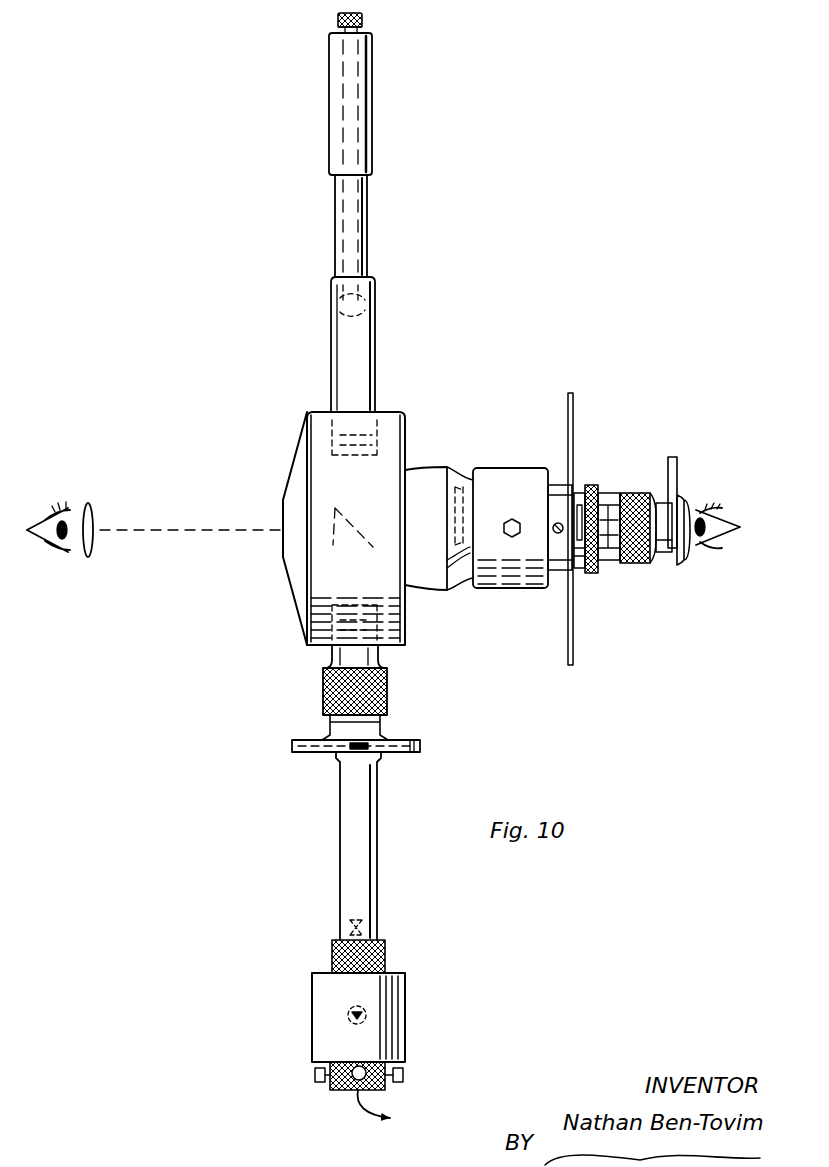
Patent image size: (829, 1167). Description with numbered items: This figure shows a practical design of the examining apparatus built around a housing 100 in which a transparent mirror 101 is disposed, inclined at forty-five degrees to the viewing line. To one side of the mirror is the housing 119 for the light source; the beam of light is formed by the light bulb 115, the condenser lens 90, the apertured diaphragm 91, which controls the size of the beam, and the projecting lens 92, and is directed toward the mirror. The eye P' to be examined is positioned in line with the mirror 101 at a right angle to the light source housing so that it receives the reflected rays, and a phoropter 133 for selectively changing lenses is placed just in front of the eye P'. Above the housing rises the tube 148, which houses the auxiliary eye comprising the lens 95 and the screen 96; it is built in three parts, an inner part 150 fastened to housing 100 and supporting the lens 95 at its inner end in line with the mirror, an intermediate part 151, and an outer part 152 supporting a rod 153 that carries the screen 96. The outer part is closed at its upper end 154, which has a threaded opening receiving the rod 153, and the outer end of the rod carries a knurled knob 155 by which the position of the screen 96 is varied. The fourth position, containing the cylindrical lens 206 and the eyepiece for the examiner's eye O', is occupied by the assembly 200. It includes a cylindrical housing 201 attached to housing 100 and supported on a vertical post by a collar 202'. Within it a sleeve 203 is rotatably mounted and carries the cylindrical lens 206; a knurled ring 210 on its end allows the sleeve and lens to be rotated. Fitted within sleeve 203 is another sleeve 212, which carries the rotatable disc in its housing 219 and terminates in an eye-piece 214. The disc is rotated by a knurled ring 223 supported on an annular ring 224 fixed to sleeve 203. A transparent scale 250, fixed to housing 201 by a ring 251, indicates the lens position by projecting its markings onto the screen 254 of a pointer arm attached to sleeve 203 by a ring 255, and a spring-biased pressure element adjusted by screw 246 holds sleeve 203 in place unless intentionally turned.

The condenser lens 90 is at (340, 910).
The apertured diaphragm 91 is at (320, 754).
The projecting lens 92 is at (328, 650).
The lens 95 is at (330, 433).
The screen 96 is at (340, 312).
The housing 100 is at (386, 410).
The transparent mirror 101 is at (347, 541).
The light bulb 115 is at (346, 1015).
The housing for the source of light 119 is at (408, 1020).
The phoropter 133 is at (92, 550).
The tube 148 is at (331, 112).
The inner part 150 is at (335, 362).
The intermediate part 151 is at (367, 230).
The outer part 152 is at (372, 105).
The rod 153 is at (335, 213).
The upper end 154 is at (340, 26).
The knurled knob 155 is at (362, 17).
The assembly 200 is at (662, 405).
The cylindrical housing 201 is at (423, 468).
The collar 202' is at (510, 559).
The sleeve 203 is at (613, 560).
The cylindrical lens 206 is at (441, 468).
The knurled ring 210 is at (635, 493).
The sleeve 212 is at (663, 553).
The eye-piece 214 is at (690, 562).
The housing 219 is at (677, 466).
The knurled ring 223 is at (592, 485).
The annular ring 224 is at (608, 493).
The screw 246 is at (556, 521).
The scale 250 is at (576, 400).
The ring 251 is at (562, 480).
The screen 254 is at (578, 568).
The ring 255 is at (580, 493).
The eye to be examined P is at (46, 518).
The examiner's eye O is at (712, 510).